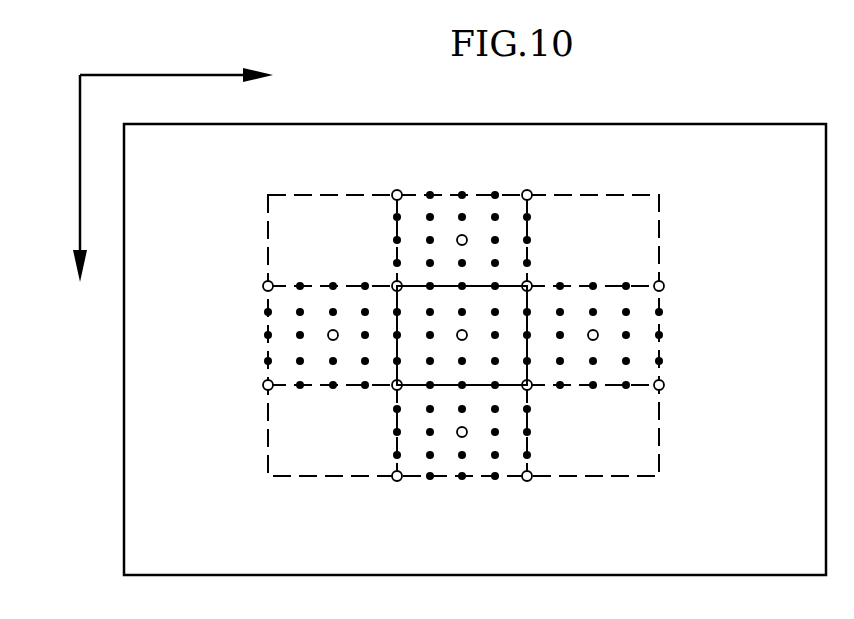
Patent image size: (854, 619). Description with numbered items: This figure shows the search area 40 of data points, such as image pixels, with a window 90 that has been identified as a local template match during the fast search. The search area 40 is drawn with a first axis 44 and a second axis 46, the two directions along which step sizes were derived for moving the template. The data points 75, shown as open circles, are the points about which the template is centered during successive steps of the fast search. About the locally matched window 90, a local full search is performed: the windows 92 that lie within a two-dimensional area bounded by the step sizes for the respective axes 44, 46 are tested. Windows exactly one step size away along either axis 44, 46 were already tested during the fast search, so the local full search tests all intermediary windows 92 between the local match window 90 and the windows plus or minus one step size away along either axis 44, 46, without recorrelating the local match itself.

The search area 40 is at (636, 124).
The first axis 44 is at (124, 75).
The second axis 46 is at (80, 150).
The data points 75 is at (457, 240).
The window 90 is at (505, 286).
The windows 92 is at (464, 195).